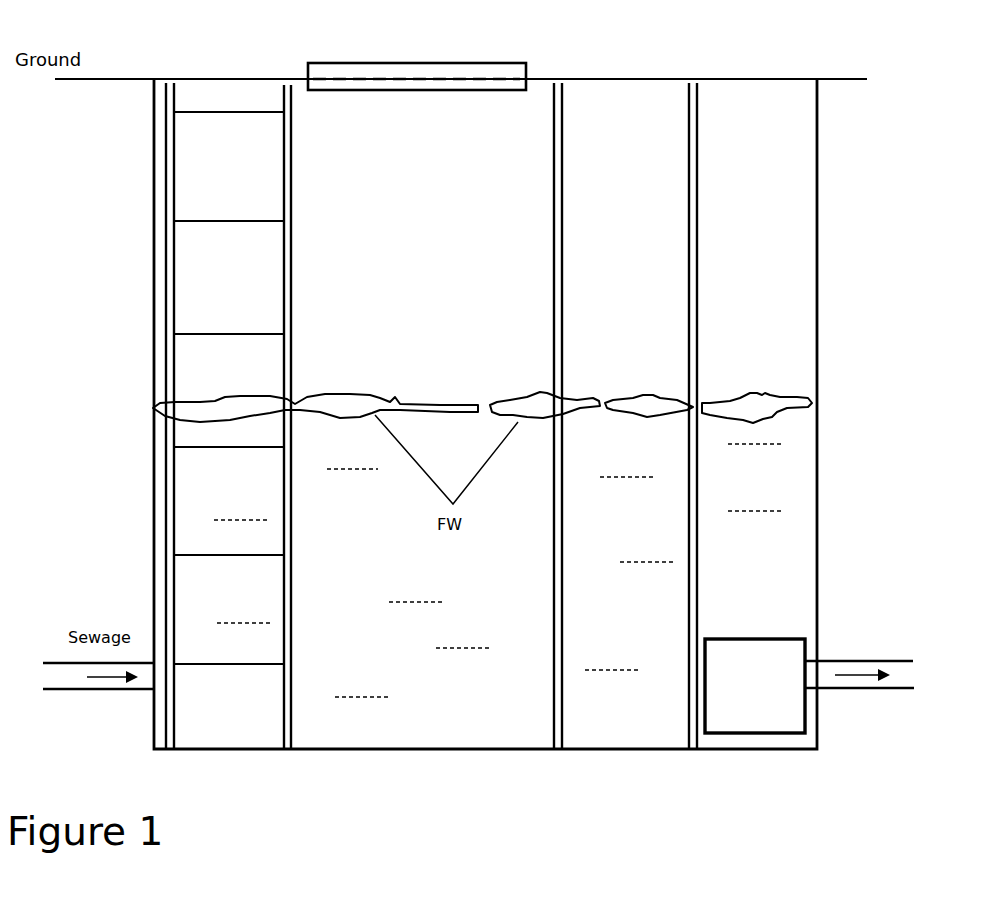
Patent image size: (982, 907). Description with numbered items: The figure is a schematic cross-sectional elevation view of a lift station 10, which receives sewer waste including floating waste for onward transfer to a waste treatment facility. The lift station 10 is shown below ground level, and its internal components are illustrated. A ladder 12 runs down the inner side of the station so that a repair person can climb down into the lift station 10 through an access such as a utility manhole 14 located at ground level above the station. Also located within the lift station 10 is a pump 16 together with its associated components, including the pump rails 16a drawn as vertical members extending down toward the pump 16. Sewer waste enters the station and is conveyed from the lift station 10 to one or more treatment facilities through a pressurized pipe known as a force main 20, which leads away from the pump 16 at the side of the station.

The lift station 10 is at (148, 168).
The ladder 12 is at (173, 273).
The utility manhole 14 is at (432, 79).
The pump 16 is at (768, 720).
The pump rails 16a is at (629, 416).
The force main 20 is at (872, 661).